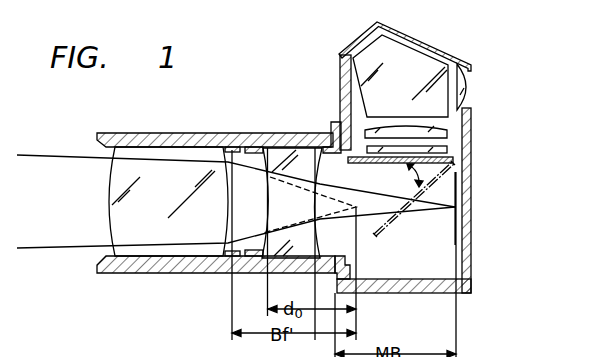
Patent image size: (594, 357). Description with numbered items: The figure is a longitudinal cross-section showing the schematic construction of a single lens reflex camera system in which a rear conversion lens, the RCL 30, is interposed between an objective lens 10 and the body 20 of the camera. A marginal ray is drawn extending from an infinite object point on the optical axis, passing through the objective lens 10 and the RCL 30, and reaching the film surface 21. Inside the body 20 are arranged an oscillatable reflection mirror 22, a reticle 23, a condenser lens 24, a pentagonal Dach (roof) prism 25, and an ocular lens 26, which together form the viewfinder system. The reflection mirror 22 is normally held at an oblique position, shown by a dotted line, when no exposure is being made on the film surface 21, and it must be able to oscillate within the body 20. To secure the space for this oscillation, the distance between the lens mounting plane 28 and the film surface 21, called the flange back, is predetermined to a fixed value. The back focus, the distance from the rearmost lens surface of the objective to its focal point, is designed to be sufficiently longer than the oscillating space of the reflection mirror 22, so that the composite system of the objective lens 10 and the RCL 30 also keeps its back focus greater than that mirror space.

The objective lens 10 is at (150, 132).
The RCL 30 is at (283, 132).
The lens mounting plane 28 is at (332, 123).
The body 20 is at (437, 44).
The pentagonal Dach (roof) prism 25 is at (457, 53).
The ocular lens 26 is at (468, 86).
The condenser lens 24 is at (448, 131).
The reticle 23 is at (448, 149).
The oscillatable reflection mirror 22 is at (378, 163).
The film surface 21 is at (460, 223).